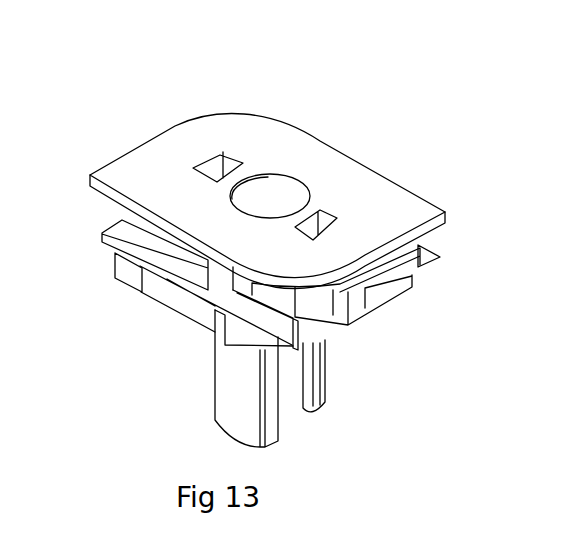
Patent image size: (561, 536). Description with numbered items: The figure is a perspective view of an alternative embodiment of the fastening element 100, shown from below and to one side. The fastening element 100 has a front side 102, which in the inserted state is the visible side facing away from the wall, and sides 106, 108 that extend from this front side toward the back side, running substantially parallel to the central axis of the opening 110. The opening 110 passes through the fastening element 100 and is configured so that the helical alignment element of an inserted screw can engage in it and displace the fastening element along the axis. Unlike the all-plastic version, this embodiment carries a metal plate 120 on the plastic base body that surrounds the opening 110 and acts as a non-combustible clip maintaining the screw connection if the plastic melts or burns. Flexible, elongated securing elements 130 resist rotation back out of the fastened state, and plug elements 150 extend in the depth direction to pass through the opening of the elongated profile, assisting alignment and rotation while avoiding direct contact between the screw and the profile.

The fastening element 100 is at (250, 255).
The front side 102 is at (207, 135).
The side 106 is at (117, 205).
The side 108 is at (385, 295).
The opening 110 is at (265, 192).
The metal plate 120 is at (167, 303).
The securing element 130 is at (282, 332).
The plug element 150 is at (228, 417).